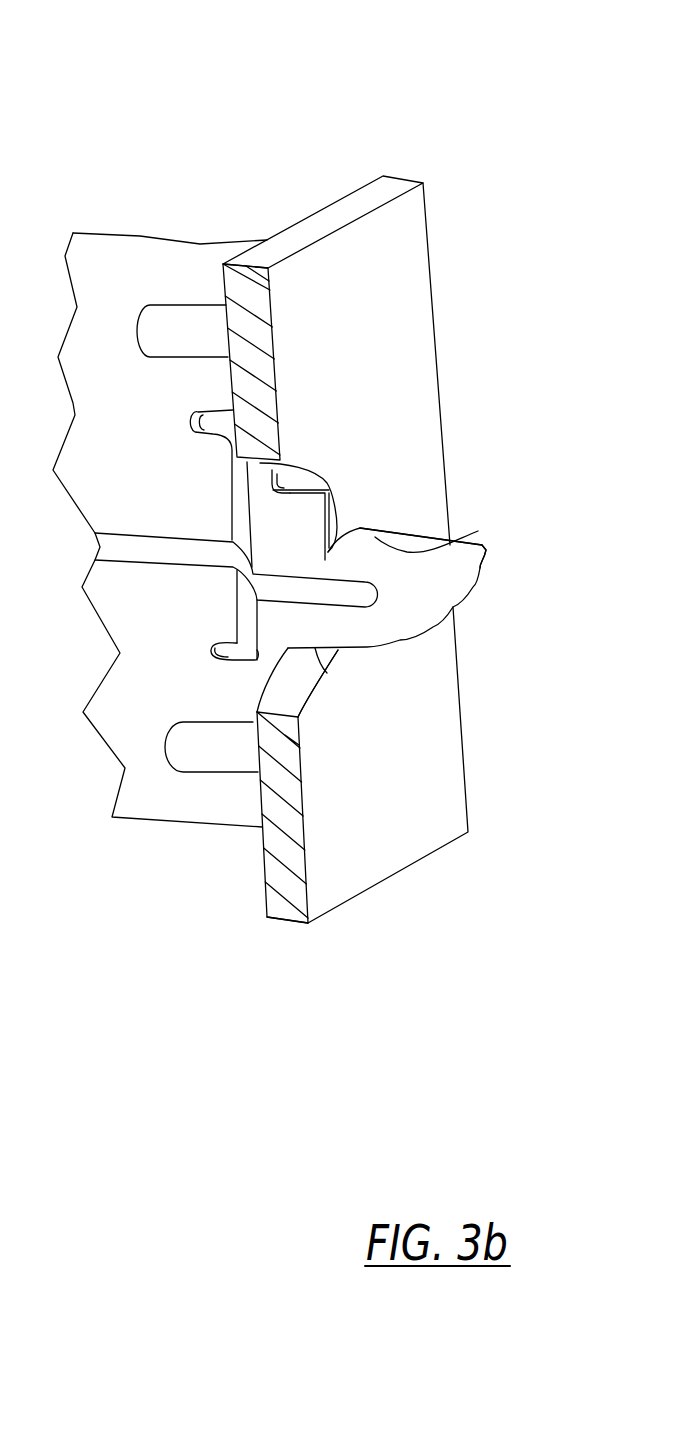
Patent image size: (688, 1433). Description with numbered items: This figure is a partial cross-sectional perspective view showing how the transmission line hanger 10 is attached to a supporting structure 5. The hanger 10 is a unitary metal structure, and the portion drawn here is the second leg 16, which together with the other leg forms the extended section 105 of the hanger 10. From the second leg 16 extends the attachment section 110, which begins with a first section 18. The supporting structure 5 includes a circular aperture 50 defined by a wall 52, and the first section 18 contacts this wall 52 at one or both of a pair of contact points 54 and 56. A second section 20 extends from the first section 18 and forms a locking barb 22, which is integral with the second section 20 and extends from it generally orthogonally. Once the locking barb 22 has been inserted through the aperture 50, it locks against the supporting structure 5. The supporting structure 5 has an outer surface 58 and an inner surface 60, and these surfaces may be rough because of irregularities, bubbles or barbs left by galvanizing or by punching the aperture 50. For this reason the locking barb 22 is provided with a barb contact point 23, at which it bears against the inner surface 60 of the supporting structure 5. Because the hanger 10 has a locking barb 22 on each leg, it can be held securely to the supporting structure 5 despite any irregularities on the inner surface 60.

The transmission line hanger 10 is at (176, 92).
The second leg 16 is at (126, 258).
The extended section 105 is at (192, 214).
The first section 18 is at (291, 505).
The contact point 54 is at (346, 526).
The barb contact point 23 is at (346, 526).
The attachment section 110 is at (468, 512).
The locking barb 22 is at (478, 531).
The second section 20 is at (408, 620).
The contact point 56 is at (317, 650).
The wall 52 is at (306, 702).
The circular aperture 50 is at (313, 650).
The outer surface 58 is at (267, 890).
The inner surface 60 is at (400, 857).
The supporting structure 5 is at (301, 908).